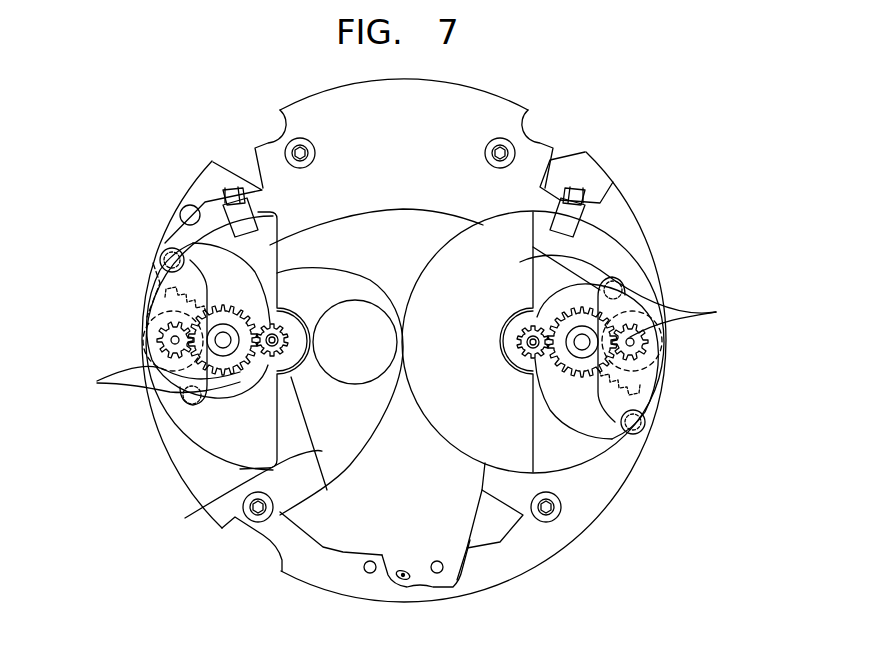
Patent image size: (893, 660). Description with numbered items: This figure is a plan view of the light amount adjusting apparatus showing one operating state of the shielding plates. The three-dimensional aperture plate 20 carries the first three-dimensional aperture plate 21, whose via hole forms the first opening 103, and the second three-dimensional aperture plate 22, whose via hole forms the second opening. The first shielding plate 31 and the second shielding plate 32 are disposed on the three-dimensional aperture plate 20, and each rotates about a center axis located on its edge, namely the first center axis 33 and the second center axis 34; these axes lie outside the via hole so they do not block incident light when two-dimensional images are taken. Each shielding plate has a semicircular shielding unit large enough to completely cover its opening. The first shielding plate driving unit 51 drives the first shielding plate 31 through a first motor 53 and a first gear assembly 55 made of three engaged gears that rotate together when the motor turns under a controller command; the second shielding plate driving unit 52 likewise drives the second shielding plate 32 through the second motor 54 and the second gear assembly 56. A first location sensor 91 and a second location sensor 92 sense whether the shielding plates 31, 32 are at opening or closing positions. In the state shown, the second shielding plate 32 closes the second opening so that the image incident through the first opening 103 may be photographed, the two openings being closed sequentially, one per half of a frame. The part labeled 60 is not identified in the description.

The 3D aperture plate 20 is at (482, 555).
The first 3D aperture plate 21 is at (190, 518).
The second 3D aperture plate 22 is at (325, 528).
The first shielding plate 31 is at (190, 430).
The second shielding plate 32 is at (520, 262).
The first center axis 33 is at (208, 265).
The second center axis 34 is at (630, 427).
The first shielding plate driving unit 51 is at (65, 257).
The second shielding plate driving unit 52 is at (743, 305).
The first motor 53 is at (170, 310).
The second motor 54 is at (642, 357).
The first gear assembly 55 is at (154, 385).
The second gear assembly 56 is at (632, 296).
The ring housing 60 is at (618, 470).
The first location sensor 91 is at (237, 212).
The second location sensor 92 is at (568, 210).
The first opening 103 is at (352, 317).